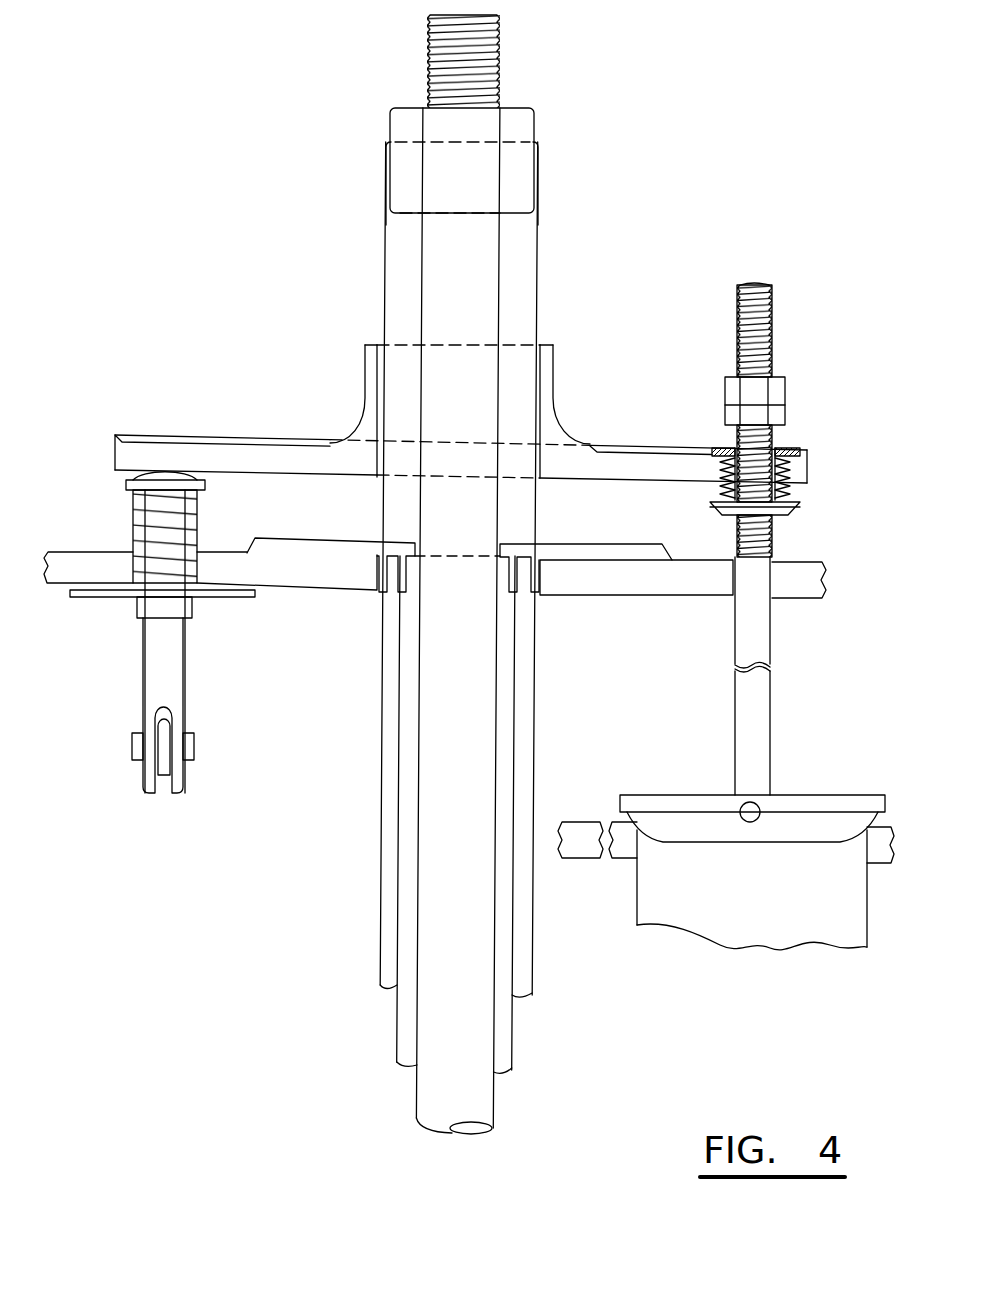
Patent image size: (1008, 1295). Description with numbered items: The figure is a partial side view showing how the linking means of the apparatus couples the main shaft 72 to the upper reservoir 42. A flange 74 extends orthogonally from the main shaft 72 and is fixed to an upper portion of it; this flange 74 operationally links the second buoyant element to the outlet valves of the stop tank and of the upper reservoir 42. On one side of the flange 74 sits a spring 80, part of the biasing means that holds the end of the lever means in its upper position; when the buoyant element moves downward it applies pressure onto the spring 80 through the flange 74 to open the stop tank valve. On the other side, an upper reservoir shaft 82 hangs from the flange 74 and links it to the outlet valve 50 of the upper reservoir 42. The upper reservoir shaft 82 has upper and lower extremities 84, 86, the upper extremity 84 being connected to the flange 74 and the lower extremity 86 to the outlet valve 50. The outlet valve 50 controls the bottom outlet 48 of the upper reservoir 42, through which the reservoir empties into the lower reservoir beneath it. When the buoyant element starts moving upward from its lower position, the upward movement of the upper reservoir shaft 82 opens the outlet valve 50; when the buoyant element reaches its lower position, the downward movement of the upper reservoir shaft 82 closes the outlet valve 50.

The upper reservoir 42 is at (624, 716).
The bottom outlet 48 is at (848, 848).
The outlet valve 50 is at (830, 803).
The main shaft 72 is at (428, 1093).
The flange 74 is at (202, 448).
The spring 80 is at (142, 537).
The upper reservoir shaft 82 is at (767, 707).
The upper extremity 84 is at (743, 790).
The lower extremity 86 is at (775, 315).